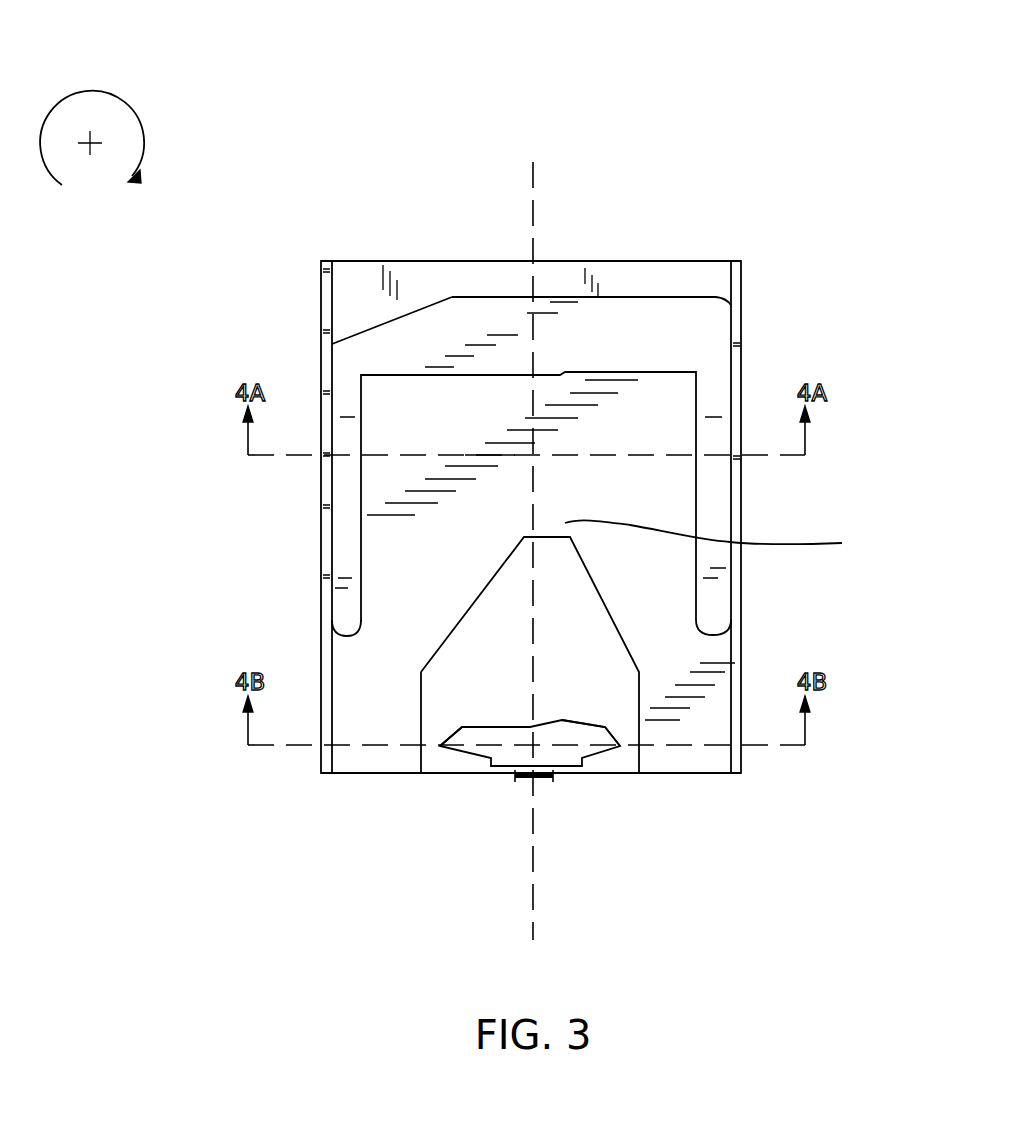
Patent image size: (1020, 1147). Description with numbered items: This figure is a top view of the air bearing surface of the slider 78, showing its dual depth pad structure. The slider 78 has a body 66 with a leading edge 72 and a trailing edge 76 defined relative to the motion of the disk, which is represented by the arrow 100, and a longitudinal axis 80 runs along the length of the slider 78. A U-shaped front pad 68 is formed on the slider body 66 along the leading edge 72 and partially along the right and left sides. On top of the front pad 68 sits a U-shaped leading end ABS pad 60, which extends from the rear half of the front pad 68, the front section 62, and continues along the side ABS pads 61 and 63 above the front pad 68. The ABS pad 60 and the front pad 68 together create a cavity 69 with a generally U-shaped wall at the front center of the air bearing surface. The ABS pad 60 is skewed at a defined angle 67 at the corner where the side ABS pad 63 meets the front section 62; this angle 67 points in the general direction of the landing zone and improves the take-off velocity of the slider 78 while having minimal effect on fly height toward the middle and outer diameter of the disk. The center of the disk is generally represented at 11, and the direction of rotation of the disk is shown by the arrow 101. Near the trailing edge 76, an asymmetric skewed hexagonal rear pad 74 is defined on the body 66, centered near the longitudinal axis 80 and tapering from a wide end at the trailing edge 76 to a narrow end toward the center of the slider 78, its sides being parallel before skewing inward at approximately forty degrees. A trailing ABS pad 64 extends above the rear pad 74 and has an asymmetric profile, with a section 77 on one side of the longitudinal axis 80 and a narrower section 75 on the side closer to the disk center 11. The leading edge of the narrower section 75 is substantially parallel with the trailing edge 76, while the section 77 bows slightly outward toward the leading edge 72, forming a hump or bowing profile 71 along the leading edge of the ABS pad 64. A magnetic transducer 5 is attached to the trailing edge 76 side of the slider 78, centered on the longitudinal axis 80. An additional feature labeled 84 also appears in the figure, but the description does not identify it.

The arrow representing disk motion 100 is at (493, 96).
The arrow representing disk rotation direction 101 is at (131, 106).
The center of the disk 11 is at (86, 150).
The longitudinal axis 80 is at (536, 178).
The slider 78 is at (775, 198).
The leading end ABS pad 60 is at (637, 296).
The angle 67 is at (367, 308).
The leading edge 72 is at (417, 247).
The front section of ABS pad 62 is at (501, 286).
The front pad 68 is at (583, 268).
The cavity 69 is at (405, 410).
The side ABS pad 63 is at (332, 502).
The side ABS pad 61 is at (732, 490).
The liquid level line 84 is at (718, 538).
The slider body 66 is at (345, 657).
The trailing ABS pad 64 is at (578, 704).
The narrower section 75 is at (474, 725).
The bowing profile 71 is at (515, 712).
The section of trailing ABS pad 77 is at (591, 728).
The magnetic transducer 5 is at (540, 780).
The trailing edge 76 is at (396, 803).
The rear pad 74 is at (442, 765).